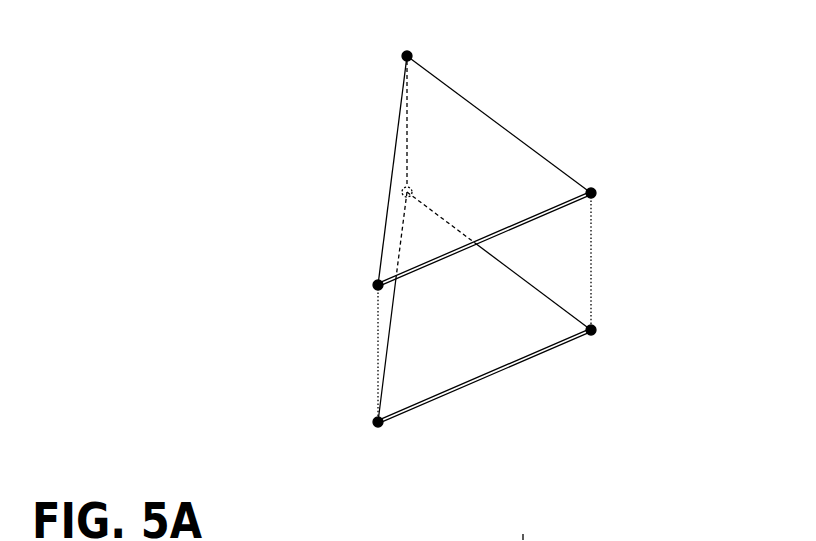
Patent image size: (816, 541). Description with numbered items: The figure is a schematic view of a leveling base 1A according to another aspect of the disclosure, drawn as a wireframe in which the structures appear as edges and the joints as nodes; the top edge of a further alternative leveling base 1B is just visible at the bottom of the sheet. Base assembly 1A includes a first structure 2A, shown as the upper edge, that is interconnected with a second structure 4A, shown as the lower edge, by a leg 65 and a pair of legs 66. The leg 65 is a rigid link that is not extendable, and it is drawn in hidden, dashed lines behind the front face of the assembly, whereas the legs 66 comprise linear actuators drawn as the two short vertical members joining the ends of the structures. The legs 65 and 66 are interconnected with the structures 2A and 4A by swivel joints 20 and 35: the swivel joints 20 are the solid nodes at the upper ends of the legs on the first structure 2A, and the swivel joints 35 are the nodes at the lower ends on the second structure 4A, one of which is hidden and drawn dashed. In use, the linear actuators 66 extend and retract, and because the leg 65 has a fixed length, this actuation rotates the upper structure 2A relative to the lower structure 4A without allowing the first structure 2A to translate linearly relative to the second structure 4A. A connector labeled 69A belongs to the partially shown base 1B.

In FIG. 5A, the leveling base 1A is at (530, 82).
In FIG. 5B, the leveling base 1B is at (582, 540).
In FIG. 5A, the first structure 2A is at (537, 152).
In FIG. 5A, the second structure 4A is at (513, 367).
In FIG. 5A, the swivel joint 20 is at (403, 52).
In FIG. 5B, the swivel joint 20 is at (467, 540).
In FIG. 5A, the swivel joint 35 is at (401, 192).
In FIG. 5A, the leg 65 is at (407, 132).
In FIG. 5A, the legs 66 is at (593, 267).
In FIG. 5B, the connector 69A is at (529, 522).